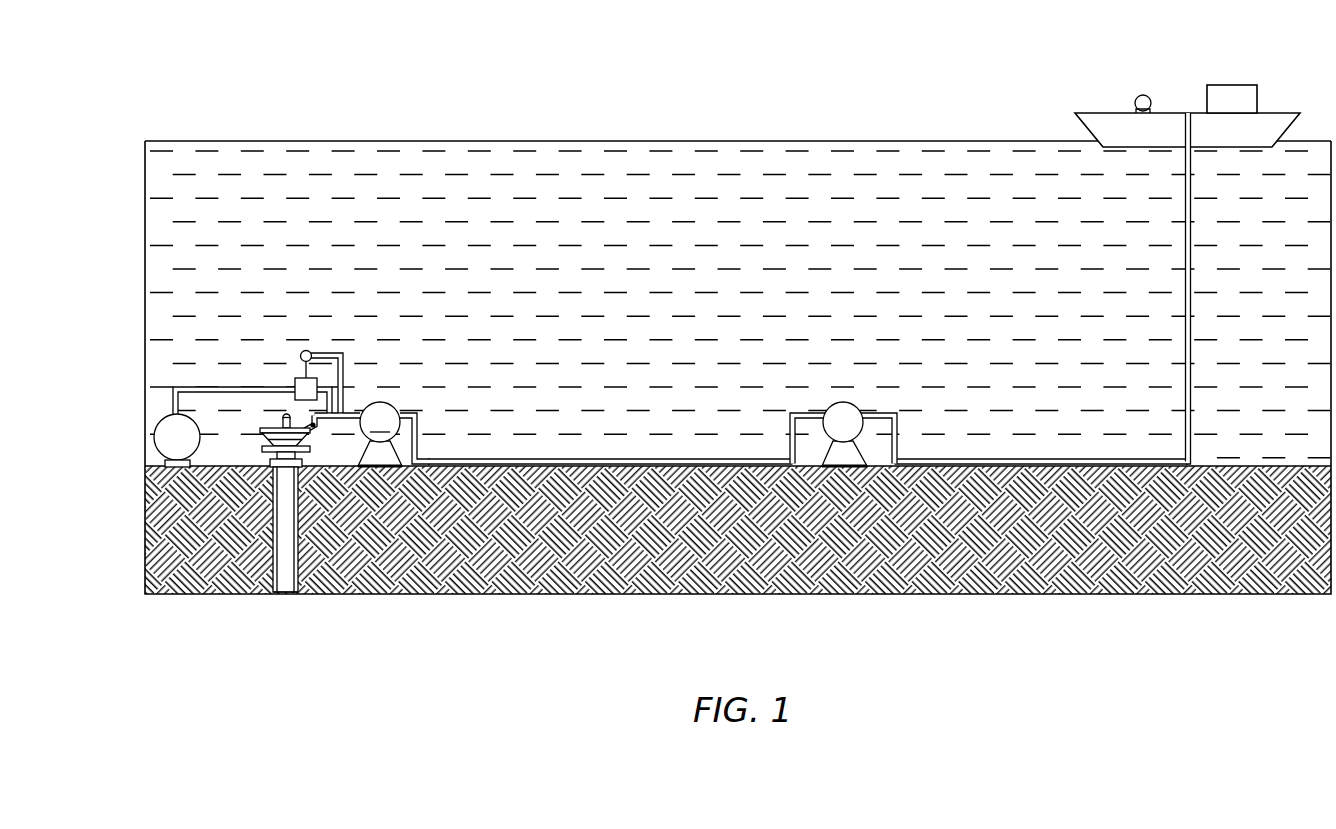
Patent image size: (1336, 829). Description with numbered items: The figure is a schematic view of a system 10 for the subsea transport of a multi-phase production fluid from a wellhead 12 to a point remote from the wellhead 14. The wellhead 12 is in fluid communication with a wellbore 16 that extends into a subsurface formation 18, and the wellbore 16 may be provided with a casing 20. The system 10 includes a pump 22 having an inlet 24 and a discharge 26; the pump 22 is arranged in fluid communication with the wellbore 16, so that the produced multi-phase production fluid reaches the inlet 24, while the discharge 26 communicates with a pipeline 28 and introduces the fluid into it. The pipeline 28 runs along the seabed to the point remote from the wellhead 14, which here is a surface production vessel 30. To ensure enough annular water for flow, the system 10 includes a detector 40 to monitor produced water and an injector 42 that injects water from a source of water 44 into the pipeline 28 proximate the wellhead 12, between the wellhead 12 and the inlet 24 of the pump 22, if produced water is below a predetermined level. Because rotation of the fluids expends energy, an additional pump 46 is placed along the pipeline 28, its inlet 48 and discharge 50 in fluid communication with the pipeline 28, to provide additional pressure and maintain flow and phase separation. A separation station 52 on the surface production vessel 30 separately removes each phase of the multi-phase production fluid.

The system 10 is at (710, 381).
The wellhead 12 is at (268, 461).
The point remote from the wellhead 14 is at (1186, 112).
The wellbore 16 is at (300, 570).
The subsurface formation 18 is at (145, 530).
The casing 20 is at (270, 570).
The pump 22 is at (380, 422).
The inlet 24 is at (359, 420).
The discharge 26 is at (415, 410).
The pipeline 28 is at (490, 457).
The surface production vessel 30 is at (1281, 112).
The detector 40 is at (308, 350).
The injector 42 is at (298, 377).
The source of water 44 is at (194, 421).
The additional pump 46 is at (845, 402).
The inlet 48 is at (826, 412).
The discharge 50 is at (869, 405).
The separation station 52 is at (1226, 85).